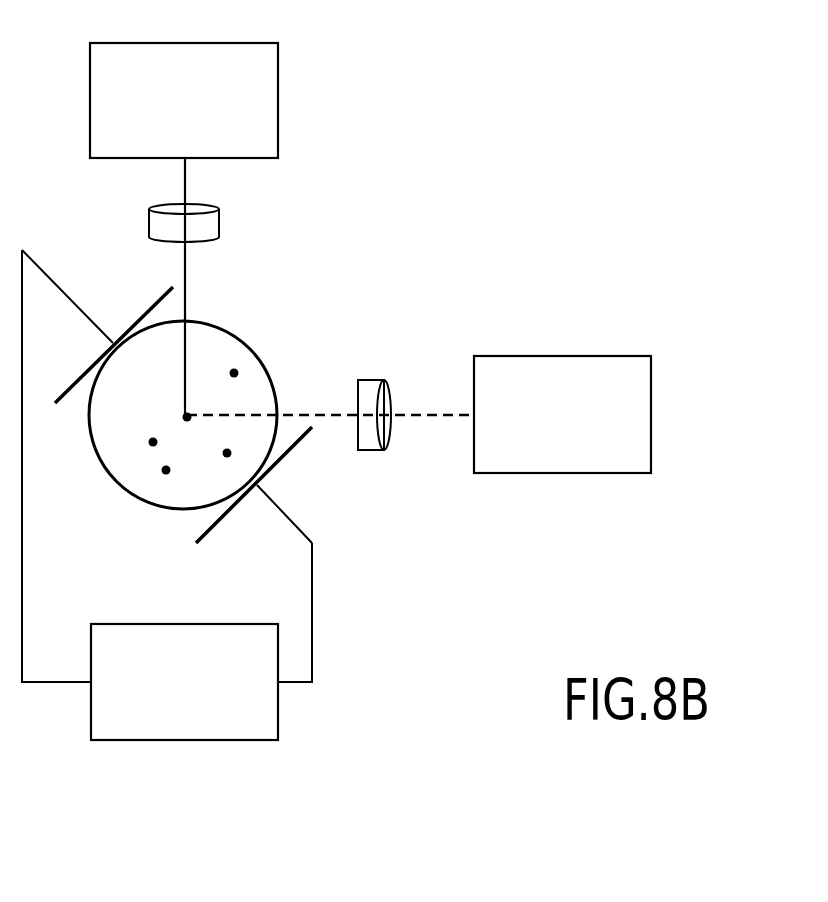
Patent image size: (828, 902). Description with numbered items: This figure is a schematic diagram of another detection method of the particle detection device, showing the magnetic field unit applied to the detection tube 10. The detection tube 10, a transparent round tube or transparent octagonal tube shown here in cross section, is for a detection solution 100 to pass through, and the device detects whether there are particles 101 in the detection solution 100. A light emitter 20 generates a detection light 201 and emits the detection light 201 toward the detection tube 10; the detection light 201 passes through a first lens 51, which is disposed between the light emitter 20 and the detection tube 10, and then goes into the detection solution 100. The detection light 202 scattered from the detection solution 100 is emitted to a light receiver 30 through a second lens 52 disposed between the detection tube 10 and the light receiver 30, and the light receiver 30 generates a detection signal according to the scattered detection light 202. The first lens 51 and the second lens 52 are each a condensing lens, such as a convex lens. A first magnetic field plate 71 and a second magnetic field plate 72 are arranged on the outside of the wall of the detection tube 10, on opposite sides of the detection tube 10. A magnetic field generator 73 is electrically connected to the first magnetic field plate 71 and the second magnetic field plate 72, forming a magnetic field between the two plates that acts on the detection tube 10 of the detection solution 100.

The detection tube 10 is at (242, 339).
The light emitter 20 is at (228, 43).
The light receiver 30 is at (558, 356).
The first lens 51 is at (149, 222).
The second lens 52 is at (372, 380).
The first magnetic field plate 71 is at (293, 448).
The second magnetic field plate 72 is at (158, 300).
The magnetic field generator 73 is at (197, 740).
The detection solution 100 is at (123, 468).
The particles 101 is at (227, 453).
The detection light 201 is at (185, 185).
The scattered detection light 202 is at (416, 418).